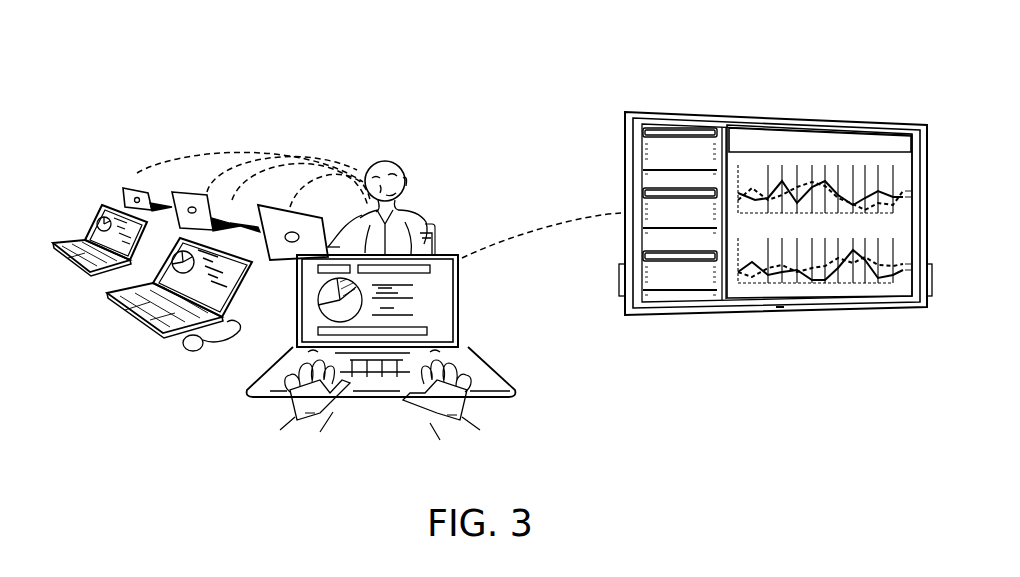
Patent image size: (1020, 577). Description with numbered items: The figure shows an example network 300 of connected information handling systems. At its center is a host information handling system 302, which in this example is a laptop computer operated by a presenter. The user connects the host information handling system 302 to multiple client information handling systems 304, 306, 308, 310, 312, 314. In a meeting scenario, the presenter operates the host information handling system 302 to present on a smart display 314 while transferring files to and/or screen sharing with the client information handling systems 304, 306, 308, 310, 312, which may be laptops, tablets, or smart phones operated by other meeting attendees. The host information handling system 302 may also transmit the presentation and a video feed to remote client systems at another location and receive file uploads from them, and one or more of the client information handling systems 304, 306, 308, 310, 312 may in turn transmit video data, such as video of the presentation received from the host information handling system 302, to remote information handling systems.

The network 300 is at (468, 88).
The host information handling system 302 is at (458, 311).
The client information handling system 304 is at (140, 320).
The client information handling system 306 is at (75, 265).
The client information handling system 308 is at (137, 188).
The client information handling system 310 is at (190, 192).
The client information handling system 312 is at (273, 205).
The smart display 314 is at (748, 112).